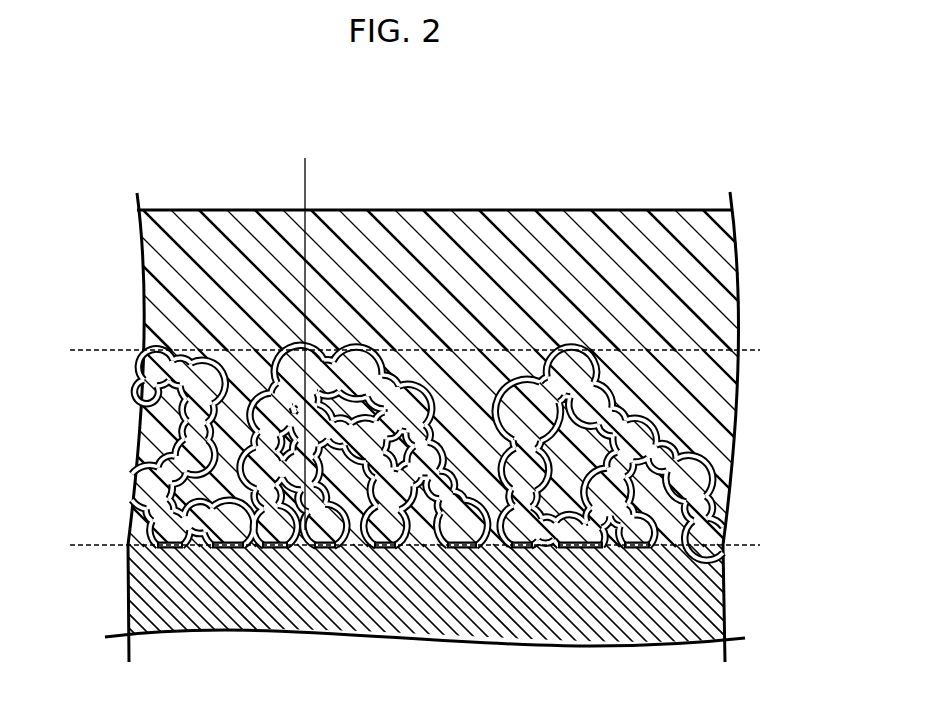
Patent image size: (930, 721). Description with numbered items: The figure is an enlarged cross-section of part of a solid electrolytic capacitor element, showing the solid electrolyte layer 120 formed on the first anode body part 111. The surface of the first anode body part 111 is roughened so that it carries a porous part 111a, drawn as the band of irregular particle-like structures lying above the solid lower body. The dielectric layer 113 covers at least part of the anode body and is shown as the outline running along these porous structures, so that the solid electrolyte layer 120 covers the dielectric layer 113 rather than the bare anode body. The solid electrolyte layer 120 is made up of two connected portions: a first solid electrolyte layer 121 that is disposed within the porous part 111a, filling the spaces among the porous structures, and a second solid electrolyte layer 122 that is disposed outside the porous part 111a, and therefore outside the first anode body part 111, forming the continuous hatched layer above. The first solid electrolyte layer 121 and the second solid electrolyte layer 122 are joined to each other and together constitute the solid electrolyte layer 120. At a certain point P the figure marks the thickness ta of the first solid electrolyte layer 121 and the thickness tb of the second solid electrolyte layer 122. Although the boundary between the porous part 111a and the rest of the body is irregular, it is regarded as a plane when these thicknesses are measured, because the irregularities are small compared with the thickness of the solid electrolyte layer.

The first anode body part 111 is at (445, 639).
The porous part 111a is at (755, 352).
The dielectric layer 113 is at (522, 382).
The solid electrolyte layer 120 is at (445, 212).
The first solid electrolyte layer 121 is at (93, 351).
The second solid electrolyte layer 122 is at (93, 208).
The point P is at (310, 333).
The thickness of first solid electrolyte layer ta is at (357, 346).
The thickness of second solid electrolyte layer tb is at (304, 276).